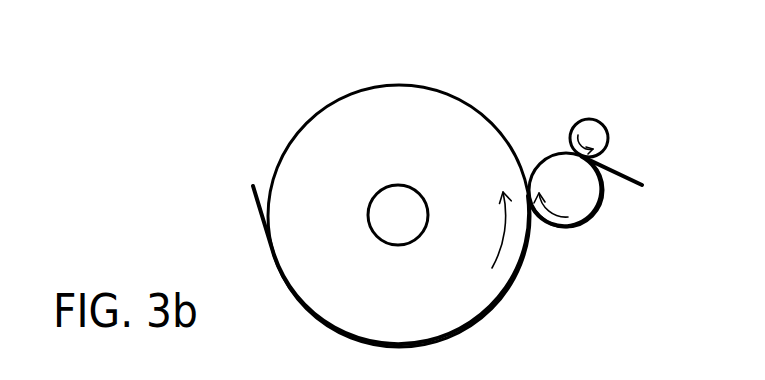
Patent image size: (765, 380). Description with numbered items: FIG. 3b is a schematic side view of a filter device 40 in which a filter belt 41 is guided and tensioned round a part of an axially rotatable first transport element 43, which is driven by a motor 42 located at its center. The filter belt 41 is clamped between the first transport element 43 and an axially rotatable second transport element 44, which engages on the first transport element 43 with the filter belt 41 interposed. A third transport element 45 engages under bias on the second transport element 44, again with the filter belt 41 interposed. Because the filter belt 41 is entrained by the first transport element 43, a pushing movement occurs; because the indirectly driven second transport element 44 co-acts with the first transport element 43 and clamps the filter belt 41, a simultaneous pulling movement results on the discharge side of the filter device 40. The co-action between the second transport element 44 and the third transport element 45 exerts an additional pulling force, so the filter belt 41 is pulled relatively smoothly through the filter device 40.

The filter device 40 is at (220, 92).
The filter belt 41 is at (257, 208).
The motor 42 is at (368, 215).
The first transport element 43 is at (400, 86).
The second transport element 44 is at (585, 200).
The third transport element 45 is at (585, 118).